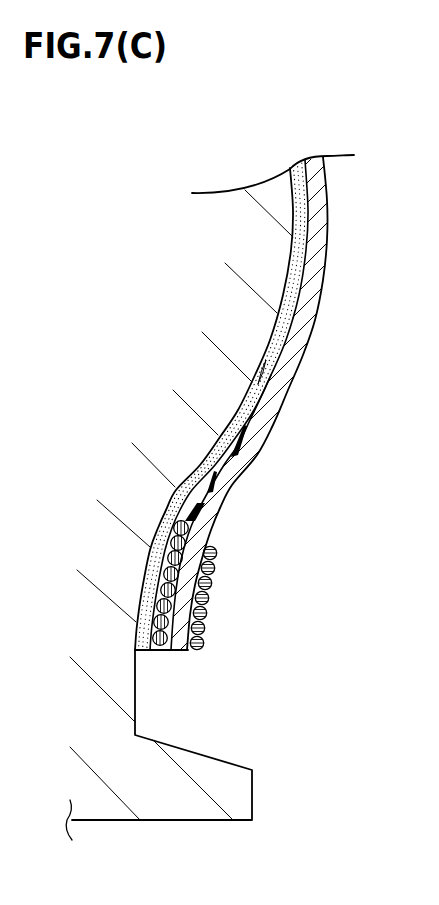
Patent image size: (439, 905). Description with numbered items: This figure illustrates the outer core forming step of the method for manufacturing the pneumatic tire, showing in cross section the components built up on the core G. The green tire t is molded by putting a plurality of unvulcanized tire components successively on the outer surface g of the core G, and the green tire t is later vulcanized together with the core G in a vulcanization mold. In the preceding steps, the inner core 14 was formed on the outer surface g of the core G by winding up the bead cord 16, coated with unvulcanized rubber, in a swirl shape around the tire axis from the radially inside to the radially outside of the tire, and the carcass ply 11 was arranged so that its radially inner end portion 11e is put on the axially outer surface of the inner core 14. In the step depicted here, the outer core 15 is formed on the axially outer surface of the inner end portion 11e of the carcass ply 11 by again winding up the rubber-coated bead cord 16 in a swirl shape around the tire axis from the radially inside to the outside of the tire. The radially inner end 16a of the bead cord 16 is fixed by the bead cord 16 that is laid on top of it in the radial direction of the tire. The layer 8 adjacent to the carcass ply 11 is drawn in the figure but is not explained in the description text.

The coating layer 8 is at (297, 278).
The outer surface of the core g is at (258, 378).
The core G is at (164, 433).
The green tire t is at (316, 320).
The carcass ply 11 is at (292, 345).
The radially inner end portion of the carcass ply 11e is at (186, 652).
The inner core 14 is at (163, 652).
The outer core 15 is at (213, 611).
The bead cord 16 is at (217, 555).
The radially inner end of the bead cord 16a is at (208, 645).